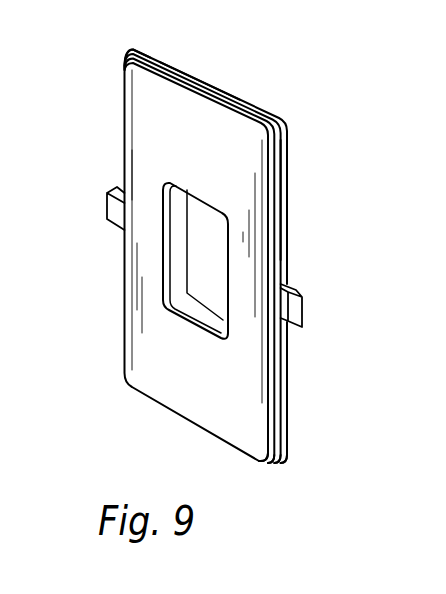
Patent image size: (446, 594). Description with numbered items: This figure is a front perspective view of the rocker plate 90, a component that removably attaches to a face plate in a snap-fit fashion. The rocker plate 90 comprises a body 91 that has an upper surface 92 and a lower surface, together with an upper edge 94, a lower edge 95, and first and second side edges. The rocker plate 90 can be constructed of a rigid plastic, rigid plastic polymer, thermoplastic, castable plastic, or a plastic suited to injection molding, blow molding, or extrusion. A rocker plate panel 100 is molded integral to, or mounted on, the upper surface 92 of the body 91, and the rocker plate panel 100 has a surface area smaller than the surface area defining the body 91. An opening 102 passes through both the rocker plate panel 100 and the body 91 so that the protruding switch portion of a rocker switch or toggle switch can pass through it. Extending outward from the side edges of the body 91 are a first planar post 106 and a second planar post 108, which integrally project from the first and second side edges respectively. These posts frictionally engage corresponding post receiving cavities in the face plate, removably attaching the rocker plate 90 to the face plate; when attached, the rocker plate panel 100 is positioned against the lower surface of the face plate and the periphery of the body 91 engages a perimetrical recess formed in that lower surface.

The rocker plate 90 is at (265, 92).
The body 91 is at (136, 50).
The upper surface 92 is at (278, 133).
The upper edge 94 is at (203, 79).
The lower edge 95 is at (272, 465).
The rocker plate panel 100 is at (140, 150).
The opening 102 is at (200, 277).
The first planar post 106 is at (300, 308).
The second planar post 108 is at (107, 202).